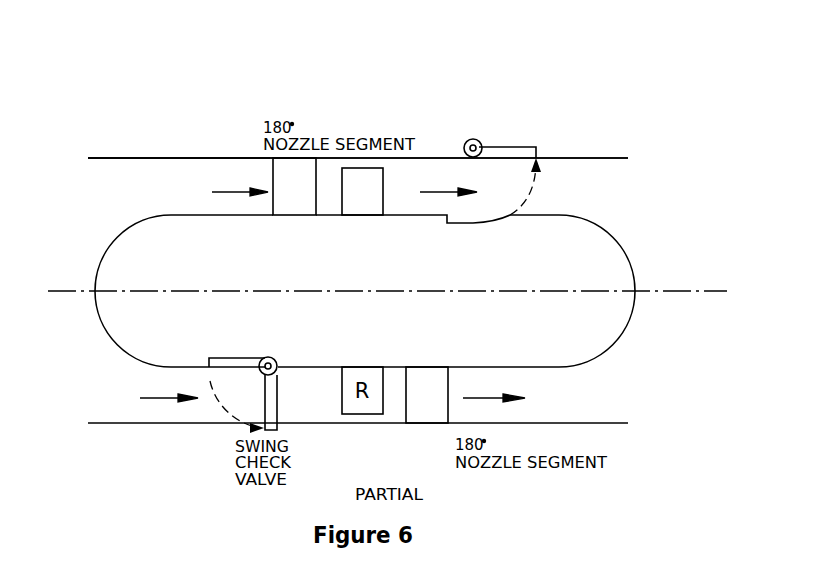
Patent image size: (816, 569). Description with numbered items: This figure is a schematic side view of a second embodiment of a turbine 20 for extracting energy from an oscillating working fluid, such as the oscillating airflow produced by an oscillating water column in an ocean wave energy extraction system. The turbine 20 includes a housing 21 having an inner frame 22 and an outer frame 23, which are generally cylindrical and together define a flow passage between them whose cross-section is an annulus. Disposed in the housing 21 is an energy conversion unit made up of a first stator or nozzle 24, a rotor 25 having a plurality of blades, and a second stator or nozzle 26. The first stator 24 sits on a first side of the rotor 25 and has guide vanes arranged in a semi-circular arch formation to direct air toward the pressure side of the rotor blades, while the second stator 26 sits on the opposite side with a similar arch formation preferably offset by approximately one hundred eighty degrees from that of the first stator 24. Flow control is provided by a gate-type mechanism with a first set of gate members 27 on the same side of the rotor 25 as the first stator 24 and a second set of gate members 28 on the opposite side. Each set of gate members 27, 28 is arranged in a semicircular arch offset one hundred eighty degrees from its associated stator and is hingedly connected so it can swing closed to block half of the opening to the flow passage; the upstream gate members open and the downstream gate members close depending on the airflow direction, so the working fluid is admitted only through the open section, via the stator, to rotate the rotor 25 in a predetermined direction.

The turbine 20 is at (614, 78).
The housing 21 is at (210, 158).
The inner frame 22 is at (95, 291).
The outer frame 23 is at (153, 160).
The first stator 24 is at (273, 178).
The rotor 25 is at (383, 188).
The second stator 26 is at (422, 417).
The first set of gate members 27 is at (265, 399).
The second set of gate members 28 is at (500, 147).